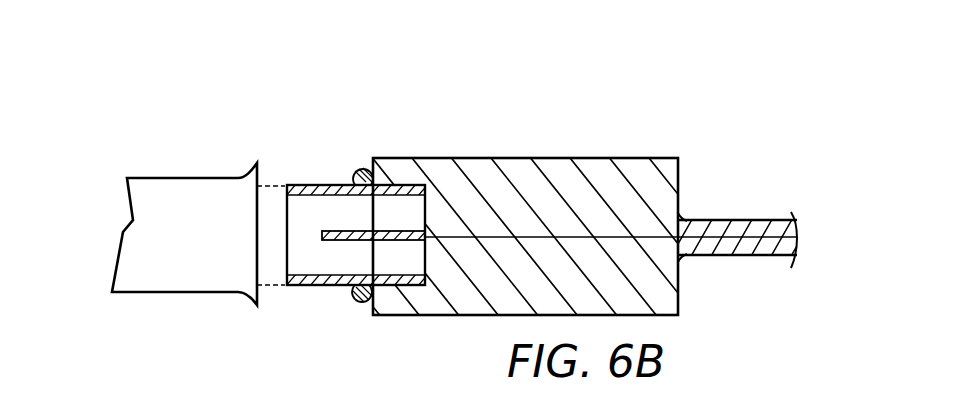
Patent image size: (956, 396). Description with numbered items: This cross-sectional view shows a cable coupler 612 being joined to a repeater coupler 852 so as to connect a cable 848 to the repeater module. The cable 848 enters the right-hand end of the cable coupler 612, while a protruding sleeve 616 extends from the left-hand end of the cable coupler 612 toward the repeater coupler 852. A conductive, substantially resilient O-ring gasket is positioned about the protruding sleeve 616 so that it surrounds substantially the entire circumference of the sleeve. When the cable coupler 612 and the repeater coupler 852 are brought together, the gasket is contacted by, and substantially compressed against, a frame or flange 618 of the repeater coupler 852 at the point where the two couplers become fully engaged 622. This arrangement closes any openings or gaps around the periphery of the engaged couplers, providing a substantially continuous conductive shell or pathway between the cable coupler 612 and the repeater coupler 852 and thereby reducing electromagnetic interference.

The cable coupler 612 is at (488, 132).
The protruding sleeve 616 is at (330, 185).
The flange 618 is at (260, 303).
The fully engaged position 622 is at (324, 288).
The cable 848 is at (735, 220).
The repeater coupler 852 is at (262, 194).